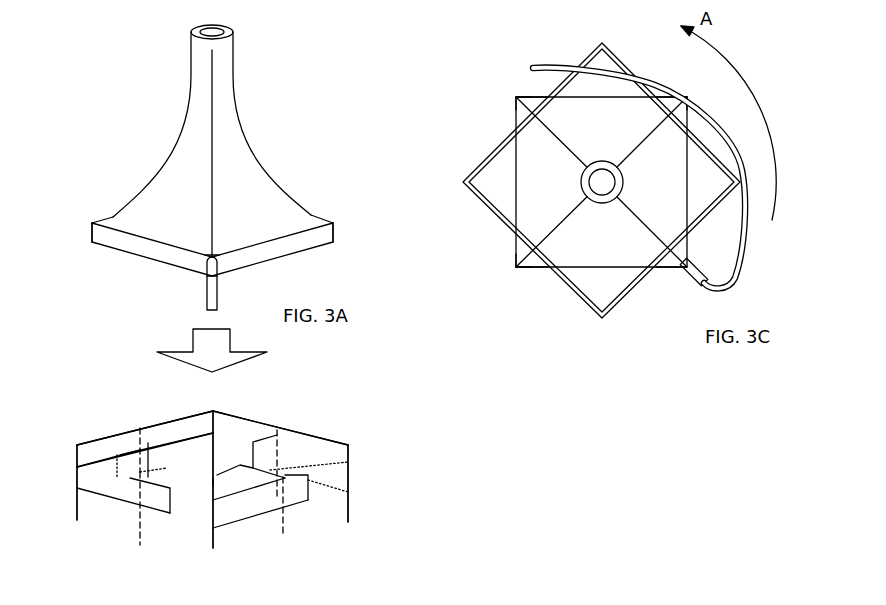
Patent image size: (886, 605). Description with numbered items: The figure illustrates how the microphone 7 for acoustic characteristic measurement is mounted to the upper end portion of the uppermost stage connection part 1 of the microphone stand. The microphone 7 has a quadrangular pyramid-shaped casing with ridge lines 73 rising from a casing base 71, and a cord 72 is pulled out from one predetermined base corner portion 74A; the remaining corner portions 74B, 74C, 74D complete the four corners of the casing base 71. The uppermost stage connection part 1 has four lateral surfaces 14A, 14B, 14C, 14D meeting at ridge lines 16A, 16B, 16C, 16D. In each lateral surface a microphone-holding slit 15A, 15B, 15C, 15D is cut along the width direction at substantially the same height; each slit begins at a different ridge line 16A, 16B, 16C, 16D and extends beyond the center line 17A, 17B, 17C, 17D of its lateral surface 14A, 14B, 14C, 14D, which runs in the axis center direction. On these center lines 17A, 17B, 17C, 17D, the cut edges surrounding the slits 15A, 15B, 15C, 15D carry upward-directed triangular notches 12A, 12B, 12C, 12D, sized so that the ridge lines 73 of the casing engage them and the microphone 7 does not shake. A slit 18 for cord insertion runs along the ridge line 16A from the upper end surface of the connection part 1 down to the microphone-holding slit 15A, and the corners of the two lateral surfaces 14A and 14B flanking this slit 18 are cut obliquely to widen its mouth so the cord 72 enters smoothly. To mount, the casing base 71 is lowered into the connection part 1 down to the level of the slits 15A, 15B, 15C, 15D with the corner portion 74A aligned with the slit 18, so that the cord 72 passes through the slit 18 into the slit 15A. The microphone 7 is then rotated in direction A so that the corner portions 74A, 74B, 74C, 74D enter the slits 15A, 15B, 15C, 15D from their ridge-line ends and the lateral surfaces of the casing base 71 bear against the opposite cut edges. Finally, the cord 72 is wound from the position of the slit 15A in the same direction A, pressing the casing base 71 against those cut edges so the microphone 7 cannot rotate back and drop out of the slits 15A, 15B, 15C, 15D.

In FIG. 3A, the uppermost stage connection part 1 is at (337, 438).
In FIG. 3C, the uppermost stage connection part 1 is at (616, 57).
In FIG. 3A, the microphone for acoustic characteristic measurement 7 is at (237, 110).
In FIG. 3C, the microphone for acoustic characteristic measurement 7 is at (689, 203).
In FIG. 3A, the casing base 71 is at (307, 213).
In FIG. 3A, the cord 72 is at (212, 307).
In FIG. 3C, the cord 72 is at (738, 268).
In FIG. 3A, the ridge lines of the casing 73 is at (212, 147).
In FIG. 3C, the ridge lines of the casing 73 is at (530, 104).
In FIG. 3A, the corner portion 74A is at (207, 258).
In FIG. 3C, the corner portion 74A is at (688, 268).
In FIG. 3A, the corner portion 74B is at (92, 225).
In FIG. 3C, the corner portion 74B is at (516, 267).
In FIG. 3C, the corner portion 74C is at (516, 97).
In FIG. 3A, the corner portion 74D is at (333, 225).
In FIG. 3C, the corner portion 74D is at (687, 97).
In FIG. 3A, the notch 12A is at (289, 485).
In FIG. 3A, the notch 12B is at (137, 482).
In FIG. 3A, the notch 12C is at (148, 445).
In FIG. 3A, the notch 12D is at (436, 441).
In FIG. 3A, the lateral surface 14A is at (346, 504).
In FIG. 3A, the lateral surface 14B is at (85, 512).
In FIG. 3A, the lateral surface 14C is at (97, 440).
In FIG. 3A, the lateral surface 14D is at (243, 417).
In FIG. 3A, the microphone-holding slit 15A is at (238, 505).
In FIG. 3A, the microphone-holding slit 15B is at (86, 482).
In FIG. 3A, the microphone-holding slit 15C is at (190, 450).
In FIG. 3A, the microphone-holding slit 15D is at (293, 453).
In FIG. 3A, the ridge line 16A is at (212, 545).
In FIG. 3A, the ridge line 16B is at (76, 508).
In FIG. 3A, the ridge line 16C is at (214, 410).
In FIG. 3A, the ridge line 16D is at (350, 458).
In FIG. 3A, the center line 17A is at (285, 538).
In FIG. 3A, the center line 17B is at (140, 545).
In FIG. 3A, the center line 17C is at (140, 430).
In FIG. 3A, the center line 17D is at (283, 421).
In FIG. 3A, the slit for cord insertion 18 is at (222, 473).